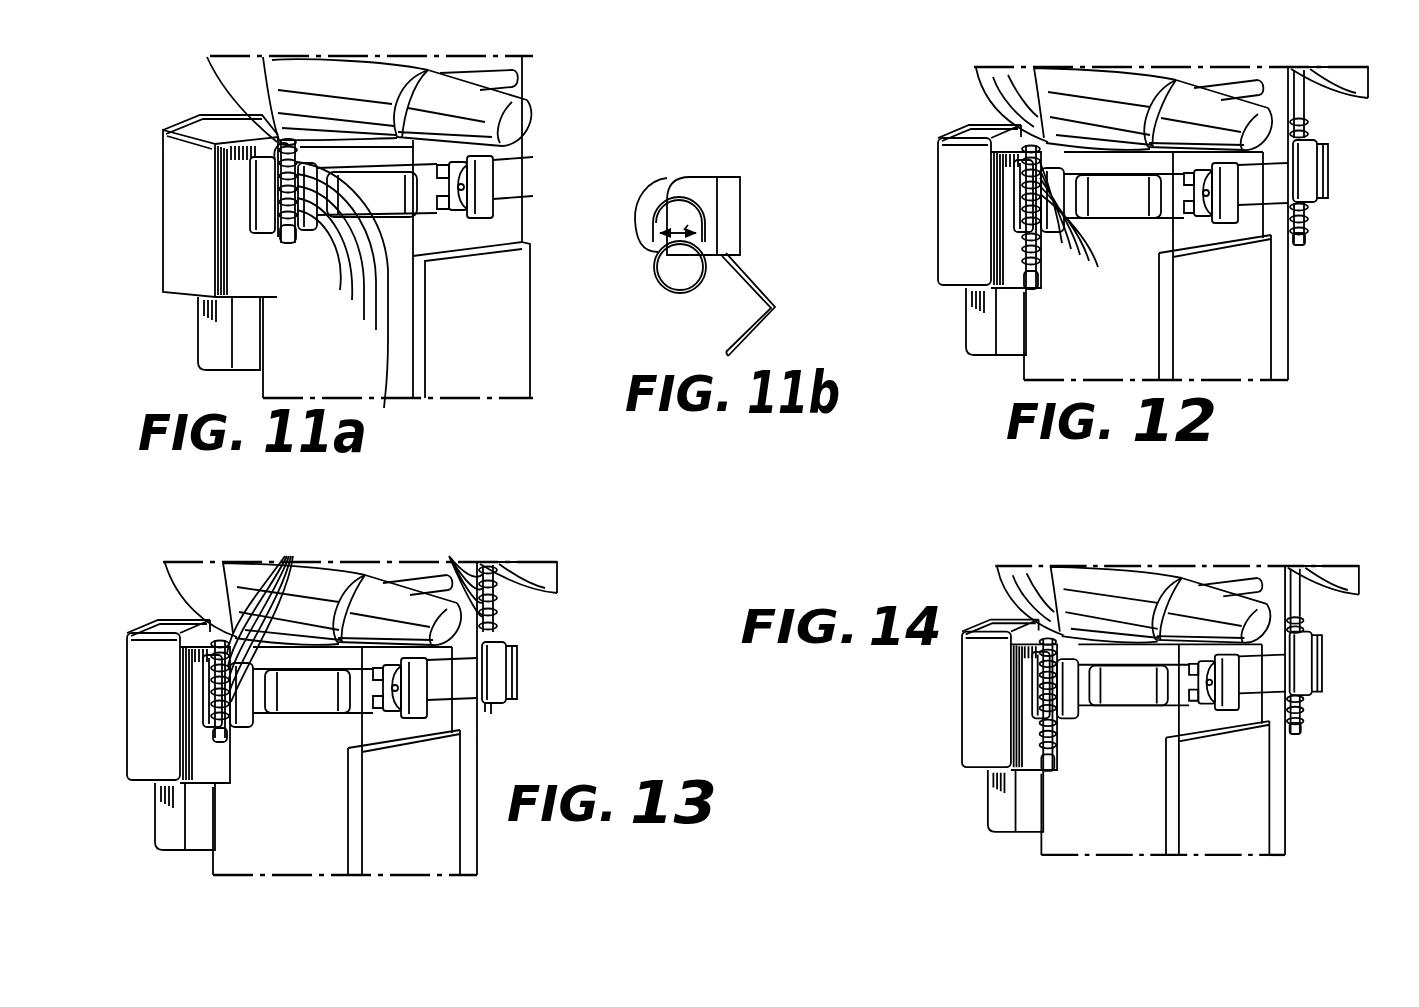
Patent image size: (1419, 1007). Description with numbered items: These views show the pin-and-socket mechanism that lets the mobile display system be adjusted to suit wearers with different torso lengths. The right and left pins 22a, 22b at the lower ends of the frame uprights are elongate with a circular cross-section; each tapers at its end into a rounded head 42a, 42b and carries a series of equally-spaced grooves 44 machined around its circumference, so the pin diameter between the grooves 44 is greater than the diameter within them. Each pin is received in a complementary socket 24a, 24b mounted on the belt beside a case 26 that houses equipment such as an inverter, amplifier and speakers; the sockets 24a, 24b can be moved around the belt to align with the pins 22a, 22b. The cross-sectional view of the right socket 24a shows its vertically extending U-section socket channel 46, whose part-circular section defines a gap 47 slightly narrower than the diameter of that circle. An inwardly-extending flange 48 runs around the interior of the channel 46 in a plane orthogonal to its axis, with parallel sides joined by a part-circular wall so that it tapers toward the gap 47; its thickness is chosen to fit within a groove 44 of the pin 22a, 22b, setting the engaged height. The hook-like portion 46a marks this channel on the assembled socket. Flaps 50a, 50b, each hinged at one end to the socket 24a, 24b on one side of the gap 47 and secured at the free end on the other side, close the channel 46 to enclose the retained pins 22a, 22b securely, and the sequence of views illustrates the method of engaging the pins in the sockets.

In FIG. 11a, the pin 22a is at (262, 213).
In FIG. 11b, the pin 22a is at (682, 275).
In FIG. 13, the pin 22a is at (160, 730).
In FIG. 12, the pin 22a is at (992, 271).
In FIG. 14, the pin 22a is at (978, 730).
In FIG. 13, the pin 22b is at (550, 598).
In FIG. 12, the pin 22b is at (1331, 194).
In FIG. 14, the pin 22b is at (1331, 671).
In FIG. 11a, the socket 24a is at (260, 175).
In FIG. 11b, the socket 24a is at (730, 230).
In FIG. 13, the socket 24a is at (152, 691).
In FIG. 12, the socket 24a is at (960, 168).
In FIG. 14, the socket 24a is at (975, 689).
In FIG. 13, the socket 24b is at (523, 692).
In FIG. 12, the socket 24b is at (1336, 166).
In FIG. 14, the socket 24b is at (1332, 663).
In FIG. 11a, the case 26 is at (200, 124).
In FIG. 13, the case 26 is at (178, 671).
In FIG. 12, the case 26 is at (963, 206).
In FIG. 14, the case 26 is at (1003, 669).
In FIG. 11a, the rounded head 42a is at (283, 232).
In FIG. 13, the rounded head 42a is at (154, 742).
In FIG. 12, the rounded head 42a is at (980, 298).
In FIG. 14, the rounded head 42a is at (998, 803).
In FIG. 12, the rounded head 42b is at (1335, 239).
In FIG. 14, the rounded head 42b is at (1310, 759).
In FIG. 11a, the grooves 44 is at (384, 408).
In FIG. 13, the grooves 44 is at (355, 614).
In FIG. 12, the grooves 44 is at (1204, 192).
In FIG. 14, the grooves 44 is at (1131, 697).
In FIG. 11b, the socket channel 46 is at (682, 217).
In FIG. 11a, the hook 46a is at (272, 163).
In FIG. 11b, the gap 47 is at (686, 230).
In FIG. 11b, the flange 48 is at (663, 203).
In FIG. 11a, the flap 50a is at (257, 185).
In FIG. 11b, the flap 50a is at (782, 312).
In FIG. 13, the flap 50a is at (169, 688).
In FIG. 12, the flap 50a is at (985, 147).
In FIG. 14, the flap 50a is at (989, 708).
In FIG. 13, the flap 50b is at (544, 670).
In FIG. 12, the flap 50b is at (1347, 171).
In FIG. 14, the flap 50b is at (1339, 663).